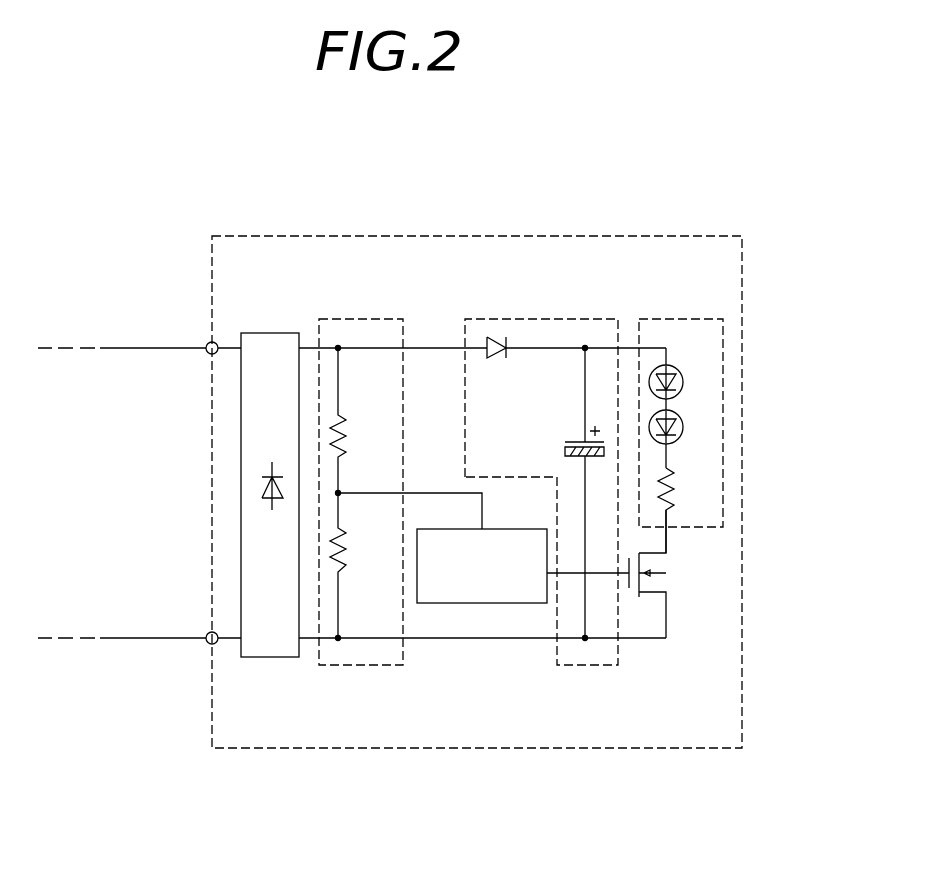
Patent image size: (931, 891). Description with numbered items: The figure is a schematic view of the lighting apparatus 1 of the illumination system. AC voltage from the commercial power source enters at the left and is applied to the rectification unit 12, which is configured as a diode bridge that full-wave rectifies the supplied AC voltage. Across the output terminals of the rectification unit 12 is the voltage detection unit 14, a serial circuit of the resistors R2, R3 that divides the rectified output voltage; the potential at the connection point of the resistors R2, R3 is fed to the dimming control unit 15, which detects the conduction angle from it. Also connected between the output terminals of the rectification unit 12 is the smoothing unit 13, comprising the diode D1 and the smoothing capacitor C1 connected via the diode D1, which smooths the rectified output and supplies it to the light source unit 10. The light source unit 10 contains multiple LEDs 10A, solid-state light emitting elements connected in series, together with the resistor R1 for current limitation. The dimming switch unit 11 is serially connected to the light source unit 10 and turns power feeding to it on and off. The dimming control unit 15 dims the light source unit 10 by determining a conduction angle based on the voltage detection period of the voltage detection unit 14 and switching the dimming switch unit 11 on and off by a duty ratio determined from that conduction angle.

The lighting apparatus 1 is at (687, 236).
The light source unit 10 is at (723, 408).
The LED 10A is at (683, 382).
The dimming switch unit 11 is at (671, 574).
The rectification unit 12 is at (270, 332).
The smoothing unit 13 is at (541, 466).
The voltage detection unit 14 is at (361, 464).
The dimming control unit 15 is at (512, 603).
The resistor R1 is at (684, 510).
The resistor R2 is at (356, 420).
The resistor R3 is at (356, 565).
The diode D1 is at (501, 367).
The smoothing capacitor C1 is at (568, 493).